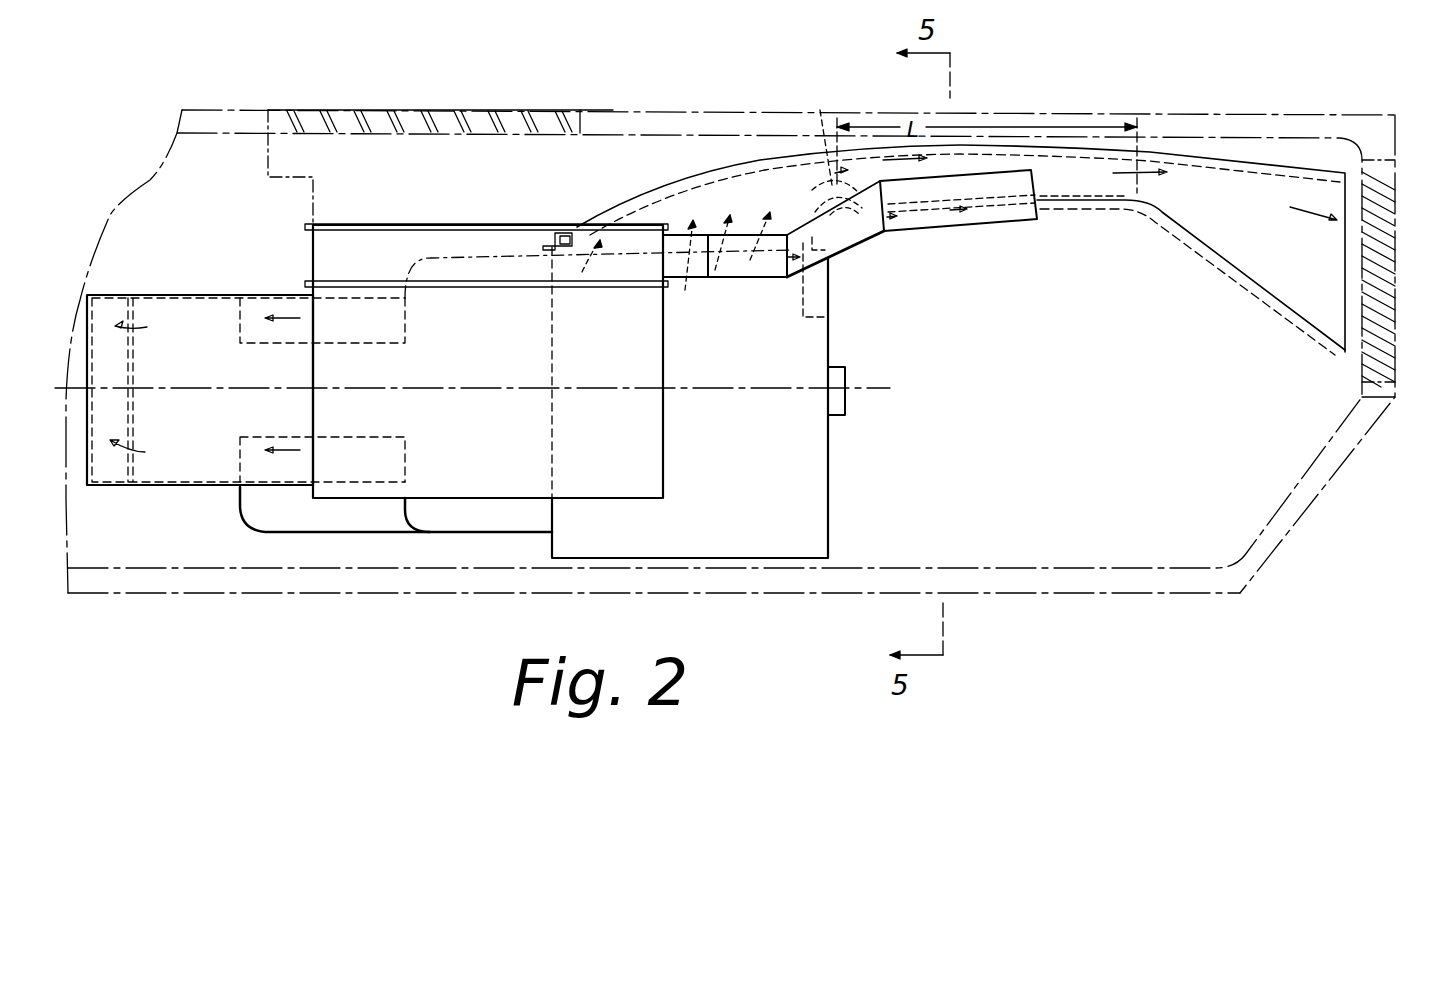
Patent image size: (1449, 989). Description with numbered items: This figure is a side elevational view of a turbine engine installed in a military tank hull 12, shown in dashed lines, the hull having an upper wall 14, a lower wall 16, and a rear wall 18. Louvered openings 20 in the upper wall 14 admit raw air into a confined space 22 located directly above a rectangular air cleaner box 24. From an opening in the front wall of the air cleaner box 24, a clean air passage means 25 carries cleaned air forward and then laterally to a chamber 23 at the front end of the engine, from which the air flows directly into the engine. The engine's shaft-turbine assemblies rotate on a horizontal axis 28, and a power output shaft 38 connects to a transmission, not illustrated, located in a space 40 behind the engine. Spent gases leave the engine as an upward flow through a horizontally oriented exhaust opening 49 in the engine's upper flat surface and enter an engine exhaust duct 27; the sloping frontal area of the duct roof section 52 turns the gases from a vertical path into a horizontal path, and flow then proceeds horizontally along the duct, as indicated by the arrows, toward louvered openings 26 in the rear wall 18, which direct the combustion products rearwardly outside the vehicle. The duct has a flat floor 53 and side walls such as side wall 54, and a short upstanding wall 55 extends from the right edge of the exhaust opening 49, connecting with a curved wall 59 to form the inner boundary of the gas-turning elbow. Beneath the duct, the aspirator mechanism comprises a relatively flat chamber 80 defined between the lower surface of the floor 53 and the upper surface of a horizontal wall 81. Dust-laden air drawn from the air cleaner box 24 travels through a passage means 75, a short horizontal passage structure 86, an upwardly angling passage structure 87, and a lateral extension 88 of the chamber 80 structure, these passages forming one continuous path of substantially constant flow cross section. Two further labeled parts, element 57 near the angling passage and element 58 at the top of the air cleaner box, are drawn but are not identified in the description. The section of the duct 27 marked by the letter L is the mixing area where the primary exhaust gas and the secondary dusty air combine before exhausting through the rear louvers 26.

The vehicle hull 12 is at (1320, 505).
The upper wall 14 is at (1125, 112).
The lower wall 16 is at (273, 590).
The rear wall 18 is at (1375, 385).
The louvered openings 20 is at (430, 112).
The confined space 22 is at (385, 185).
The chamber 23 is at (115, 302).
The air cleaner box 24 is at (660, 363).
The clean air passage means 25 is at (182, 477).
The louvered openings 26 is at (1392, 300).
The engine exhaust duct 27 is at (725, 165).
The horizontal axis 28 is at (175, 388).
The power output shaft 38 is at (838, 375).
The space 40 is at (1048, 415).
The exhaust opening 49 is at (633, 247).
The roof section 52 is at (665, 180).
The floor 53 is at (980, 200).
The side wall 54 is at (775, 165).
The upstanding wall 55 is at (812, 225).
The bulkhead passage 57 is at (837, 270).
The mounting bracket 58 is at (562, 233).
The curved wall 59 is at (826, 134).
The passage means 75 is at (683, 270).
The chamber 80 is at (1007, 213).
The horizontal wall 81 is at (957, 225).
The horizontal passage structure 86 is at (740, 278).
The upwardly angling passage structure 87 is at (853, 243).
The lateral extension 88 is at (1032, 180).